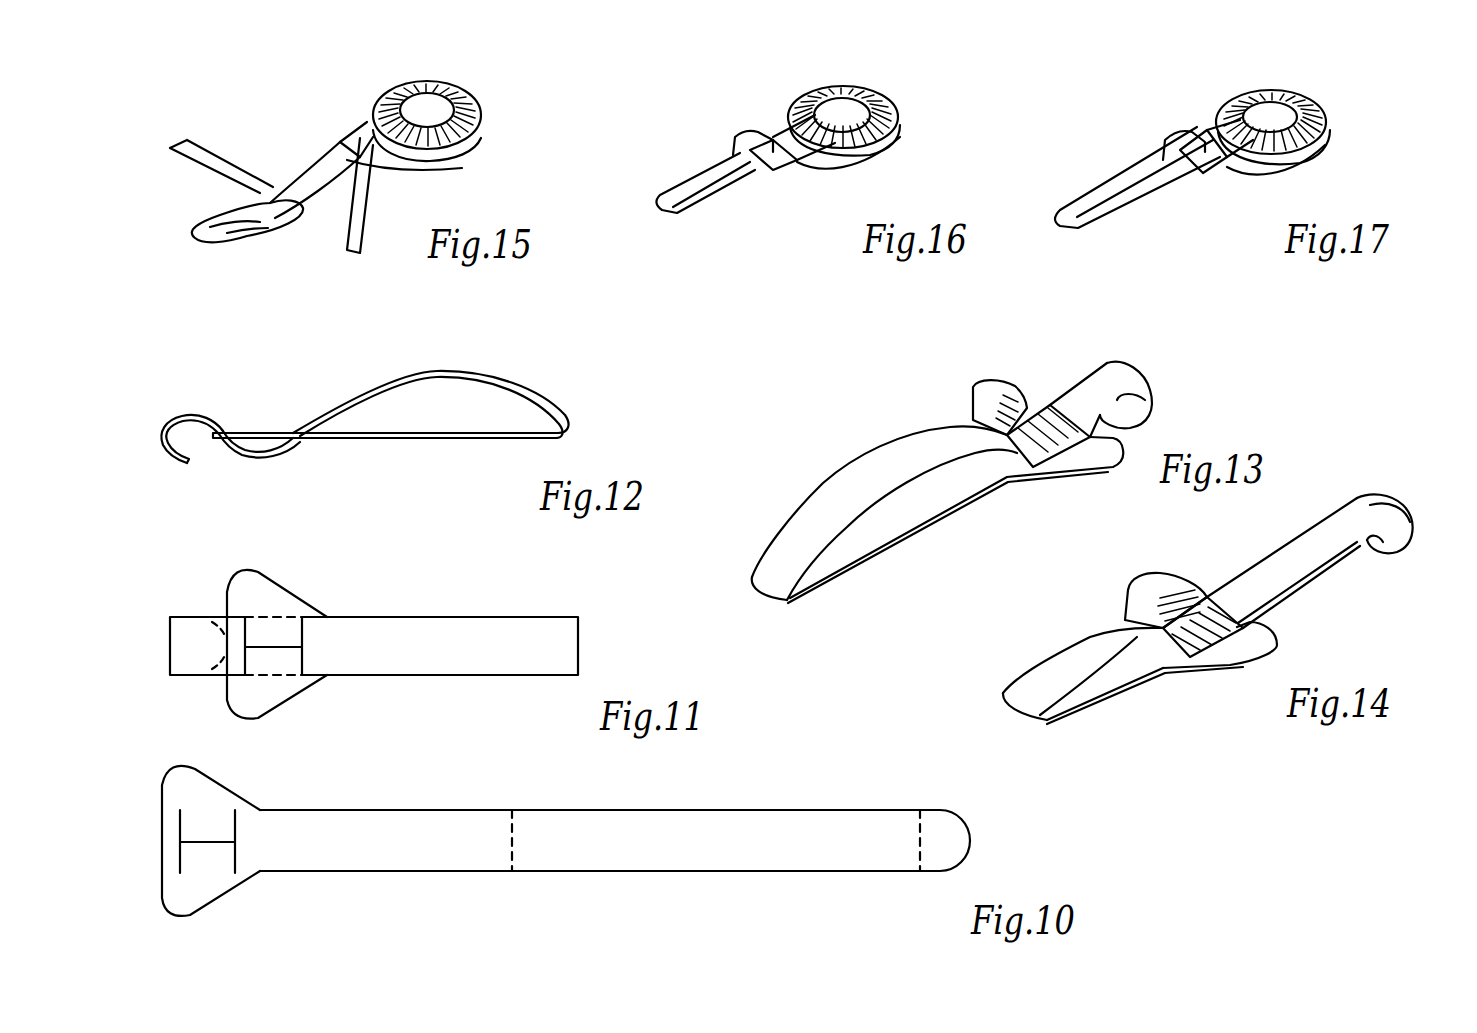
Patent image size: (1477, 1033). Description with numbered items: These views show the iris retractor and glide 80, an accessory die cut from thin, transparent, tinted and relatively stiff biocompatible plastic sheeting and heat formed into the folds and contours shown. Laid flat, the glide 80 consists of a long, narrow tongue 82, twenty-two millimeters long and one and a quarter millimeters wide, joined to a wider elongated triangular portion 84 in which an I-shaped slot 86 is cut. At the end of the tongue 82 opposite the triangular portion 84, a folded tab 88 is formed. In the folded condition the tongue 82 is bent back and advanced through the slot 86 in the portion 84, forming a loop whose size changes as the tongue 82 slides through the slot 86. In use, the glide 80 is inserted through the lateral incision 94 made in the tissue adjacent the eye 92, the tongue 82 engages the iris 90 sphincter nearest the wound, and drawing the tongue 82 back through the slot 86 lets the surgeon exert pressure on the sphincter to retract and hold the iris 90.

In FIG. 10, the iris retractor and glide 80 is at (542, 858).
In FIG. 11, the iris retractor and glide 80 is at (350, 641).
In FIG. 12, the iris retractor and glide 80 is at (363, 425).
In FIG. 13, the iris retractor and glide 80 is at (969, 461).
In FIG. 14, the iris retractor and glide 80 is at (1158, 639).
In FIG. 15, the iris retractor and glide 80 is at (328, 175).
In FIG. 16, the iris retractor and glide 80 is at (770, 145).
In FIG. 17, the iris retractor and glide 80 is at (1185, 147).
In FIG. 10, the tongue 82 is at (608, 822).
In FIG. 11, the tongue 82 is at (440, 627).
In FIG. 12, the tongue 82 is at (350, 438).
In FIG. 13, the tongue 82 is at (843, 490).
In FIG. 14, the tongue 82 is at (1296, 543).
In FIG. 15, the tongue 82 is at (221, 166).
In FIG. 16, the tongue 82 is at (745, 164).
In FIG. 17, the tongue 82 is at (1154, 174).
In FIG. 10, the elongated triangular portion 84 is at (221, 799).
In FIG. 11, the elongated triangular portion 84 is at (263, 718).
In FIG. 13, the elongated triangular portion 84 is at (987, 403).
In FIG. 14, the elongated triangular portion 84 is at (1137, 600).
In FIG. 10, the I-shaped slot 86 is at (209, 842).
In FIG. 11, the I-shaped slot 86 is at (303, 655).
In FIG. 12, the I-shaped slot 86 is at (259, 444).
In FIG. 13, the I-shaped slot 86 is at (1013, 410).
In FIG. 14, the I-shaped slot 86 is at (1127, 628).
In FIG. 15, the I-shaped slot 86 is at (220, 240).
In FIG. 16, the I-shaped slot 86 is at (752, 178).
In FIG. 17, the I-shaped slot 86 is at (1180, 147).
In FIG. 11, the folded tab 88 is at (198, 665).
In FIG. 12, the folded tab 88 is at (183, 467).
In FIG. 13, the folded tab 88 is at (1152, 395).
In FIG. 14, the folded tab 88 is at (1367, 553).
In FIG. 15, the folded tab 88 is at (358, 197).
In FIG. 15, the iris 90 is at (407, 85).
In FIG. 16, the iris 90 is at (823, 88).
In FIG. 17, the iris 90 is at (1253, 93).
In FIG. 15, the eye 92 is at (472, 157).
In FIG. 16, the eye 92 is at (880, 155).
In FIG. 17, the eye 92 is at (1313, 163).
In FIG. 15, the lateral incision 94 is at (353, 137).
In FIG. 16, the lateral incision 94 is at (767, 137).
In FIG. 17, the lateral incision 94 is at (1193, 140).